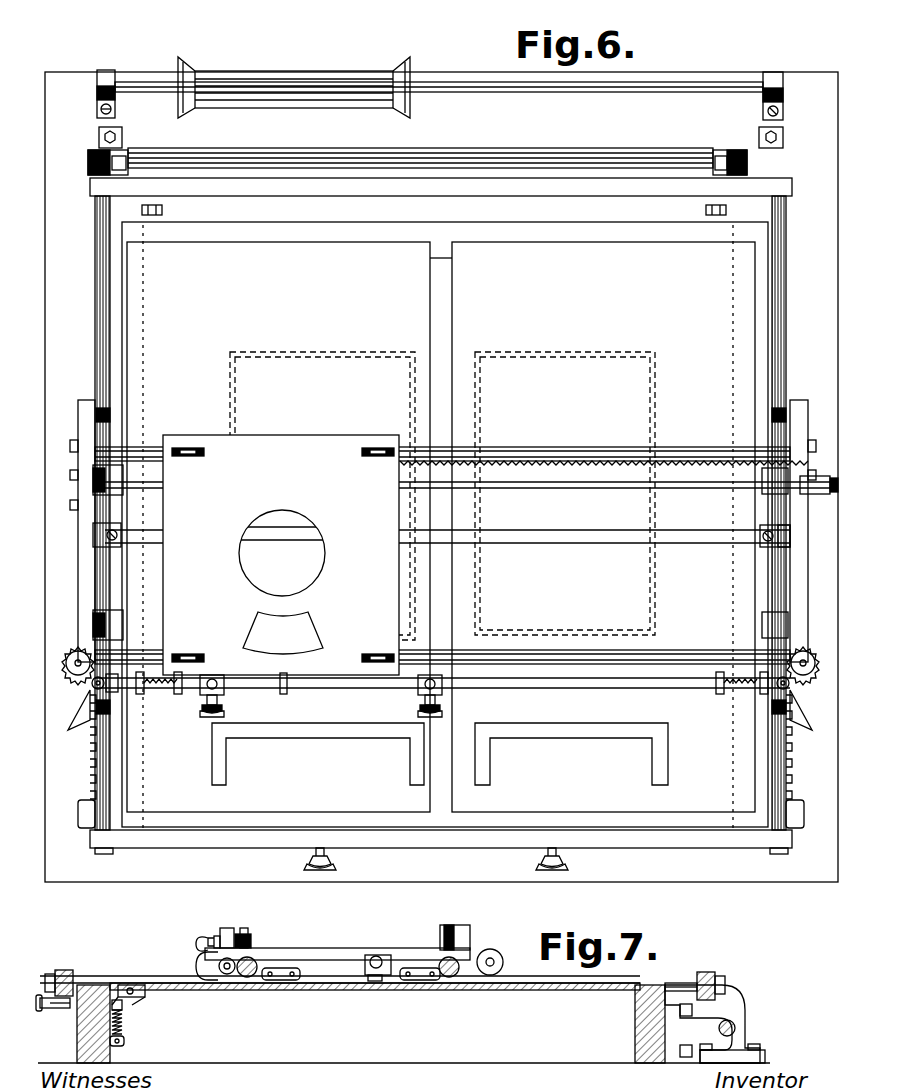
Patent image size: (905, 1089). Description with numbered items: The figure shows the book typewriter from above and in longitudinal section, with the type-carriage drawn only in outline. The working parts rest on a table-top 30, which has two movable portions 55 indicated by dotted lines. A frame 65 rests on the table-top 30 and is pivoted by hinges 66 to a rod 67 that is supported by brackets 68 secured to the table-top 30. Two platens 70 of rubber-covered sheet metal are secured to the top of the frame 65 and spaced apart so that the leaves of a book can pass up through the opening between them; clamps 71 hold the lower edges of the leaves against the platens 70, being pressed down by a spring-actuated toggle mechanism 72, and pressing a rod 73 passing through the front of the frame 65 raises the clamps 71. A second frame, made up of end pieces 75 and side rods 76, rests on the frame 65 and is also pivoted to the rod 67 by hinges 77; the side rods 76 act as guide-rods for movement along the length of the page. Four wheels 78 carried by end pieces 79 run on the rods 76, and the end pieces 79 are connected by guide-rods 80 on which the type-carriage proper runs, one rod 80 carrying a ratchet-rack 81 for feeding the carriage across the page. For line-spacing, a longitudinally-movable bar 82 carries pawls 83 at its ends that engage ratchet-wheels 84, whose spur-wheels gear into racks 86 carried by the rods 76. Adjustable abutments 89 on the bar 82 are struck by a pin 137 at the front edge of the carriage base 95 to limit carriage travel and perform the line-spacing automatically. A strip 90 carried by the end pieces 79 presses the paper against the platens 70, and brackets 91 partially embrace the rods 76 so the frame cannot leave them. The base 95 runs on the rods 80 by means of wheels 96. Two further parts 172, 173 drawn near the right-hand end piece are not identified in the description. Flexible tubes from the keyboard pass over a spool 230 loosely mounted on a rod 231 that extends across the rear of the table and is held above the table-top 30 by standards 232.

In FIG. 6, the table-top 30 is at (465, 120).
In FIG. 6, the movable portions 55 is at (314, 376).
In FIG. 6, the frame 65 is at (614, 236).
In FIG. 7, the frame 65 is at (375, 1007).
In FIG. 6, the hinges 66 is at (162, 208).
In FIG. 7, the hinges 66 is at (719, 1030).
In FIG. 6, the rod 67 is at (540, 158).
In FIG. 7, the rod 67 is at (735, 1028).
In FIG. 6, the brackets 68 is at (99, 140).
In FIG. 7, the brackets 68 is at (765, 1055).
In FIG. 6, the platens 70 is at (441, 527).
In FIG. 7, the platens 70 is at (548, 984).
In FIG. 6, the clamps 71 is at (440, 754).
In FIG. 7, the clamps 71 is at (167, 976).
In FIG. 7, the spring-actuated toggle mechanism 72 is at (122, 1008).
In FIG. 6, the rod 73 is at (310, 864).
In FIG. 7, the rod 73 is at (60, 1008).
In FIG. 6, the end pieces 75 is at (435, 198).
In FIG. 7, the end pieces 75 is at (64, 970).
In FIG. 6, the side rods 76 is at (97, 333).
In FIG. 7, the side rods 76 is at (682, 983).
In FIG. 6, the hinges 77 is at (126, 154).
In FIG. 7, the hinges 77 is at (738, 1000).
In FIG. 6, the wheels 78 is at (110, 414).
In FIG. 7, the wheels 78 is at (492, 950).
In FIG. 6, the end pieces 79 is at (84, 402).
In FIG. 7, the end pieces 79 is at (333, 950).
In FIG. 6, the guide-rods 80 is at (592, 447).
In FIG. 7, the guide-rods 80 is at (247, 977).
In FIG. 6, the ratchet-rack 81 is at (527, 462).
In FIG. 6, the longitudinally-movable bar 82 is at (559, 688).
In FIG. 7, the longitudinally-movable bar 82 is at (226, 990).
In FIG. 6, the pawls 83 is at (440, 707).
In FIG. 6, the ratchet-wheels 84 is at (70, 652).
In FIG. 6, the rack 86 is at (90, 758).
In FIG. 6, the adjustable abutments 89 is at (224, 690).
In FIG. 7, the adjustable abutments 89 is at (220, 952).
In FIG. 6, the strip 90 is at (517, 538).
In FIG. 7, the strip 90 is at (384, 975).
In FIG. 6, the brackets 91 is at (123, 481).
In FIG. 7, the brackets 91 is at (282, 980).
In FIG. 6, the base of the type-carriage 95 is at (281, 555).
In FIG. 6, the wheels 96 is at (190, 457).
In FIG. 6, the pin 137 is at (288, 688).
In FIG. 6, the rod 172 is at (562, 488).
In FIG. 6, the block 173 is at (778, 538).
In FIG. 6, the spool 230 is at (296, 78).
In FIG. 6, the rod 231 is at (450, 84).
In FIG. 6, the standards 232 is at (106, 72).